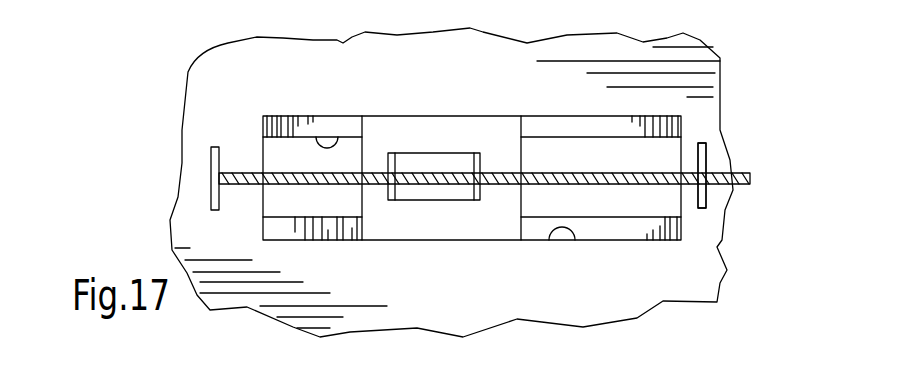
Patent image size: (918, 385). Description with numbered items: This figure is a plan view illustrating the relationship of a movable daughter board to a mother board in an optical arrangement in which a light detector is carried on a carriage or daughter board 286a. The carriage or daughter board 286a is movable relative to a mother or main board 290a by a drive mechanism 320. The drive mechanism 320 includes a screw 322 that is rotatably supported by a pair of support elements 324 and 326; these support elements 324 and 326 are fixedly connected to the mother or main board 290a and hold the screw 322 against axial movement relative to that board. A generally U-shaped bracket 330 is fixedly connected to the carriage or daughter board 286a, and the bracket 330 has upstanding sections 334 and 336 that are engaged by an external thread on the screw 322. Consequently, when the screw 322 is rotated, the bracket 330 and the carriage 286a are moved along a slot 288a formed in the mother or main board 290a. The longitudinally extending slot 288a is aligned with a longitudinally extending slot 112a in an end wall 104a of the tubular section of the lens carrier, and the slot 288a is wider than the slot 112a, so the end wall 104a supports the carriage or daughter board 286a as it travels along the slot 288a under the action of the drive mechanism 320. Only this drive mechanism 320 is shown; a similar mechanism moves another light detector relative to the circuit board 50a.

The circuit board 50a is at (222, 41).
The mother or main board 290a is at (650, 70).
The slot 112a is at (316, 137).
The end wall 104a is at (620, 230).
The slot 288a is at (570, 231).
The carriage or daughter board 286a is at (442, 130).
The bracket 330 is at (423, 200).
The upstanding section 334 is at (395, 158).
The upstanding section 336 is at (480, 153).
The screw 322 is at (632, 175).
The support element 324 is at (210, 189).
The support element 326 is at (706, 197).
The drive mechanism 320 is at (716, 122).